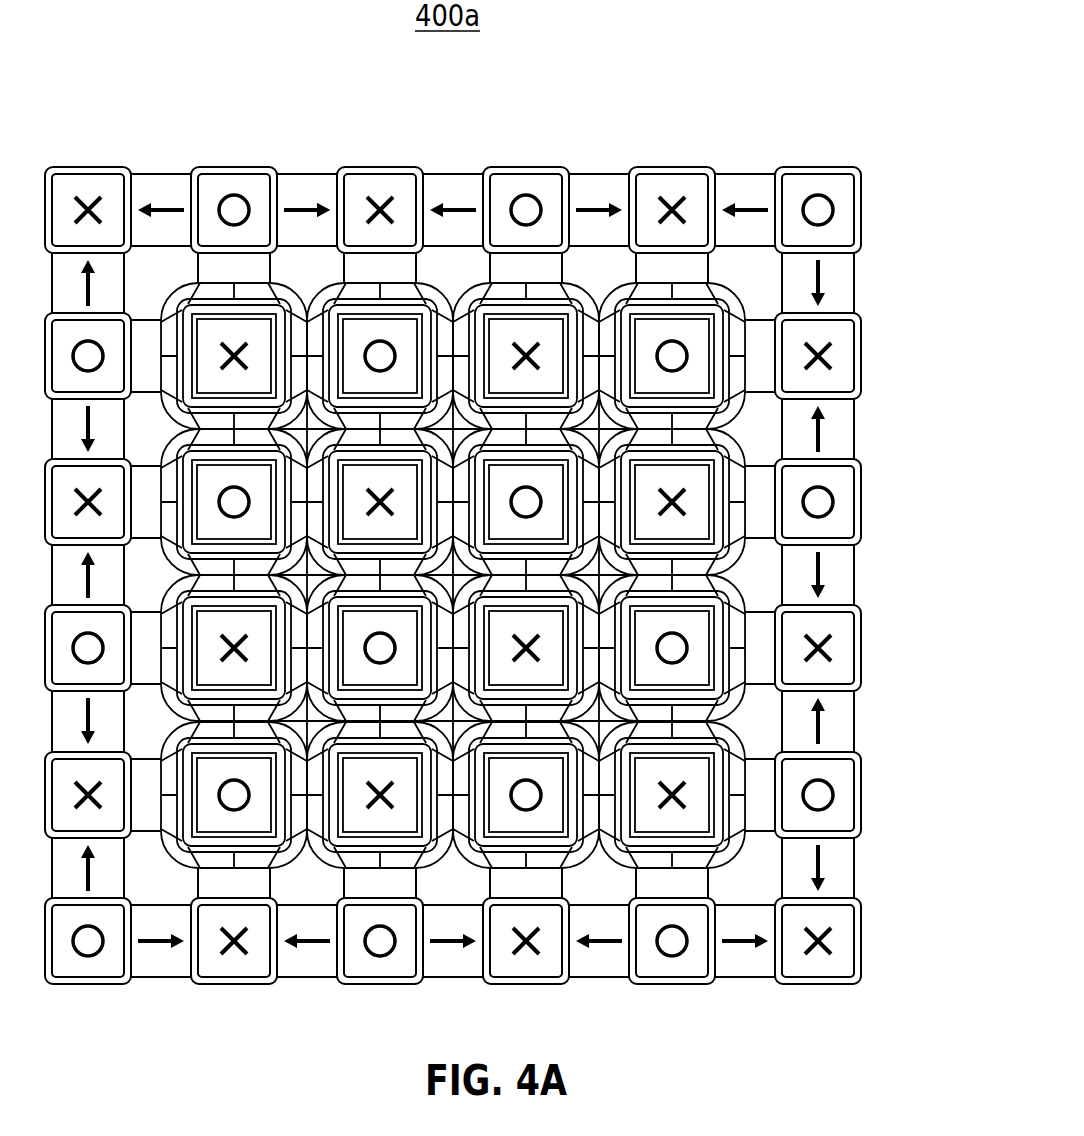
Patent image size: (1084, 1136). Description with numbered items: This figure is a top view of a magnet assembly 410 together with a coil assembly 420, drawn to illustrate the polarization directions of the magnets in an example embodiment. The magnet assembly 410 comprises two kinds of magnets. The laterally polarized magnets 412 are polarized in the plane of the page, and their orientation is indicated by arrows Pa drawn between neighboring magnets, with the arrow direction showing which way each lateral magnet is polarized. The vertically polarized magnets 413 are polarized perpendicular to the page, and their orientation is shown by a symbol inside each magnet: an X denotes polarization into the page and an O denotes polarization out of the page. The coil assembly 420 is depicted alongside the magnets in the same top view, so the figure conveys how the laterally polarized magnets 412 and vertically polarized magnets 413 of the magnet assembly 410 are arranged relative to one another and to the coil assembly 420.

The magnet assembly 410 is at (502, 577).
The laterally polarized magnets 412 is at (310, 185).
The vertically polarized magnets 413 is at (518, 190).
The coil assembly 420 is at (175, 882).
The arrows Pa is at (168, 203).